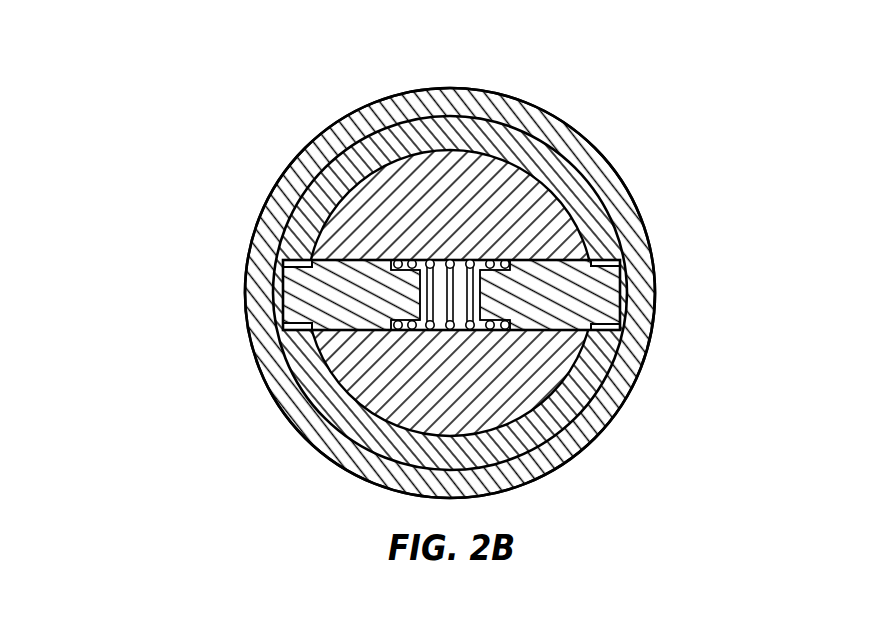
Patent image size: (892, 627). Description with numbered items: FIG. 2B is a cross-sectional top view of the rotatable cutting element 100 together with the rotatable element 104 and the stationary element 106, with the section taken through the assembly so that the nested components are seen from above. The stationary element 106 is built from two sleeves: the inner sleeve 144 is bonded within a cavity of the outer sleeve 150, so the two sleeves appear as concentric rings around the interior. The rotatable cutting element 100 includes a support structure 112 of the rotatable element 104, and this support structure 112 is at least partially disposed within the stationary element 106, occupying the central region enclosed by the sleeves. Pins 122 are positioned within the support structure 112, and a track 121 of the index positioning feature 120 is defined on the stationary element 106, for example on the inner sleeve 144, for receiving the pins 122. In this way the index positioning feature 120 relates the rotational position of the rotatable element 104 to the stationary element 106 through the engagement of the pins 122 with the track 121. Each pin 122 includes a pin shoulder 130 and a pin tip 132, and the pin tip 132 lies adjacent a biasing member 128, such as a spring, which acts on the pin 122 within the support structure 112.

The rotatable cutting element 100 is at (196, 103).
The rotatable element 104 is at (533, 168).
The stationary element 106 is at (150, 402).
The support structure 112 is at (347, 215).
The index positioning feature 120 is at (543, 258).
The track 121 is at (608, 262).
The pins 122 is at (620, 307).
The biasing member 128 is at (485, 257).
The pin shoulder 130 is at (482, 302).
The pin tip 132 is at (508, 260).
The inner sleeve 144 is at (337, 410).
The outer sleeve 150 is at (292, 393).